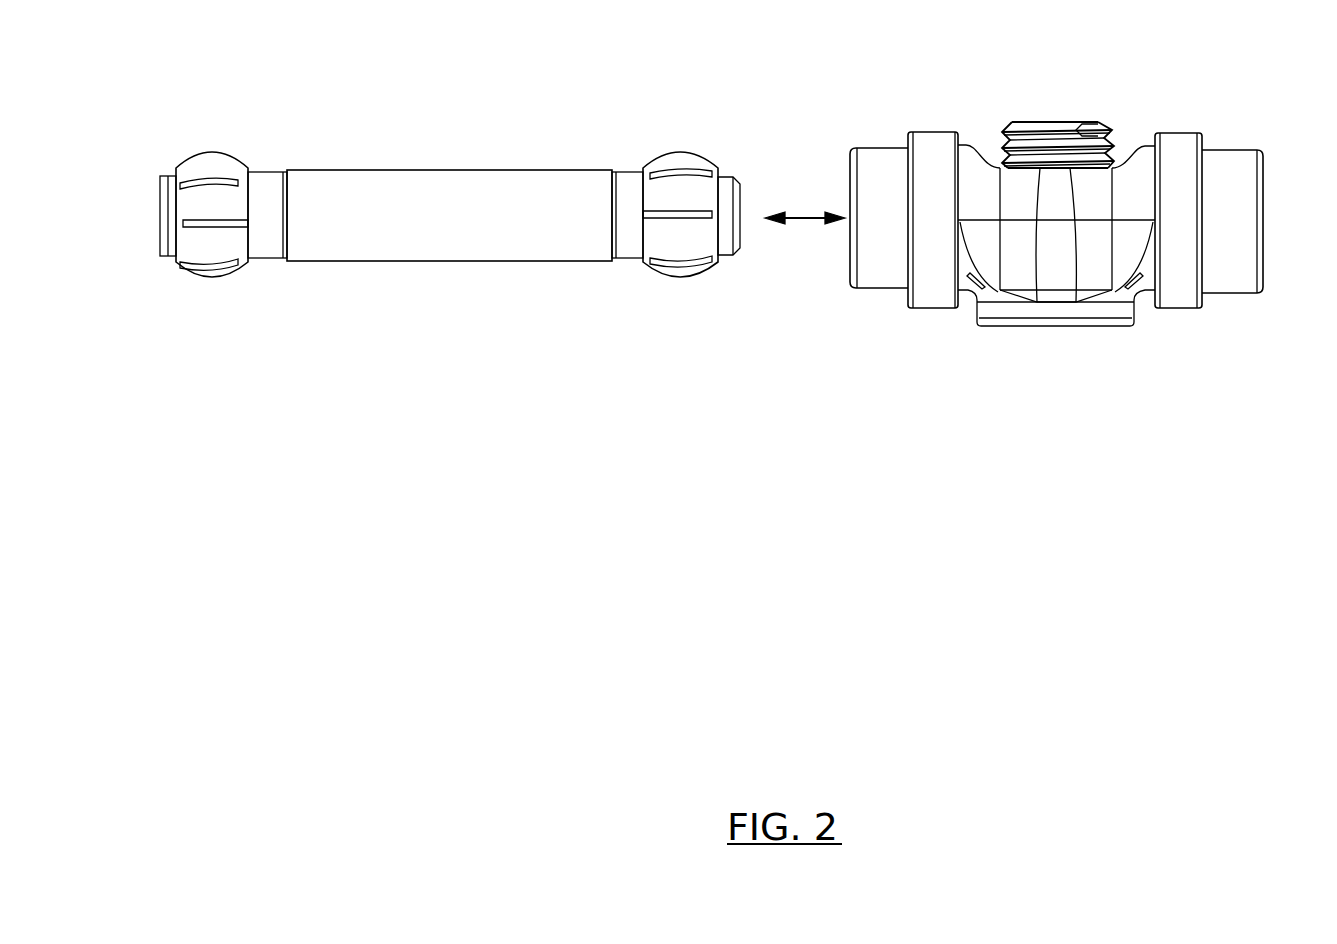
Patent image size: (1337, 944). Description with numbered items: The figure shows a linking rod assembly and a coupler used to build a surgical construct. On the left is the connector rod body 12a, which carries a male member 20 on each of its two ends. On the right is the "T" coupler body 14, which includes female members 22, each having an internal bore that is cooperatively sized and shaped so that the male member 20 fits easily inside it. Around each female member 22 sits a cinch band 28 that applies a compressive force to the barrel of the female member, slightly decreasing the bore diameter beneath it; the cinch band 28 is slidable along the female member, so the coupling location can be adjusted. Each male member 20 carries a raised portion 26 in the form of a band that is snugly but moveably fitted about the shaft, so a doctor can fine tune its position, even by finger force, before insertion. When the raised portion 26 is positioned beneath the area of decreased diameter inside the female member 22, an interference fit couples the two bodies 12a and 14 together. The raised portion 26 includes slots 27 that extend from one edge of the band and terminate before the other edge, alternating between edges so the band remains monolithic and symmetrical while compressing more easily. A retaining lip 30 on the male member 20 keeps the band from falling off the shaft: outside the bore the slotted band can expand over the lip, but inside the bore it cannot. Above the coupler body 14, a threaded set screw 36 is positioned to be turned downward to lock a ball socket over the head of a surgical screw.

The connector rod body 12a is at (405, 170).
The "T" coupler body 14 is at (1127, 165).
The male member 20 is at (268, 172).
The female member 22 is at (873, 148).
The raised portion 26 is at (218, 165).
The slots 27 is at (173, 187).
The cinch band 28 is at (938, 308).
The retaining lip 30 is at (728, 262).
The threaded set screw 36 is at (1015, 115).